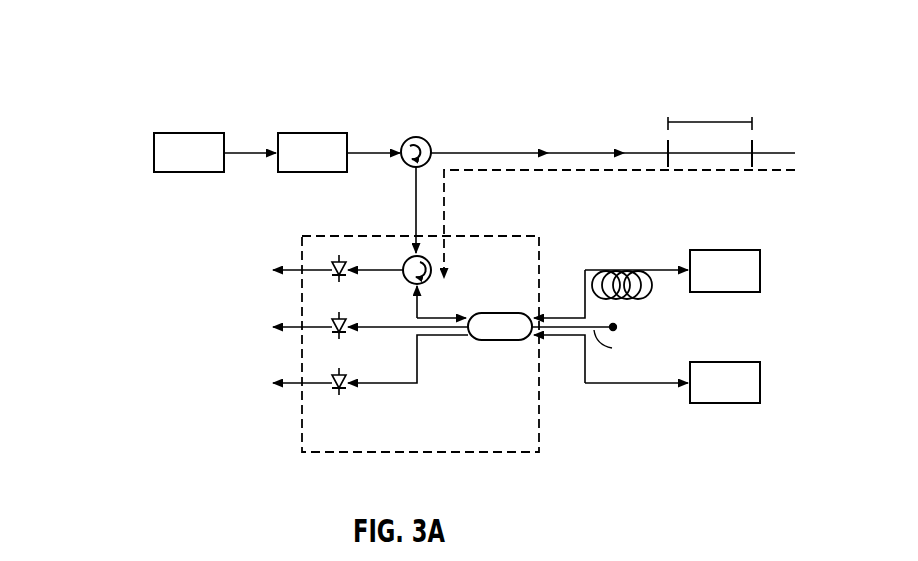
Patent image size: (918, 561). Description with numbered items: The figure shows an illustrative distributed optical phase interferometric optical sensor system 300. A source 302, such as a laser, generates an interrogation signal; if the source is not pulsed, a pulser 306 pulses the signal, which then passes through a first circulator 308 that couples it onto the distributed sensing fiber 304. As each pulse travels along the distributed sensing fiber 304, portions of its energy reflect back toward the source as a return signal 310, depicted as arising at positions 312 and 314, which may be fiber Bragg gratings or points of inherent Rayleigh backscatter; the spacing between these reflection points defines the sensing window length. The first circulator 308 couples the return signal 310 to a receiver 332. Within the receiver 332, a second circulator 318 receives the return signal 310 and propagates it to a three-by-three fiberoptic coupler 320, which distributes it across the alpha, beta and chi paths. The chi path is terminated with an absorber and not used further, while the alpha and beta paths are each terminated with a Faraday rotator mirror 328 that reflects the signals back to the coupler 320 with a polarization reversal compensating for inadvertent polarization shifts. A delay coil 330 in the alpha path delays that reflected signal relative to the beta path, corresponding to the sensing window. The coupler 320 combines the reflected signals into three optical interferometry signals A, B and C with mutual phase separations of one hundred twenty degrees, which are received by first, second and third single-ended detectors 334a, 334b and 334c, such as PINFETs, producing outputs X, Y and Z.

The optical sensor system 300 is at (110, 49).
The source 302 is at (189, 133).
The distributed sensing fiber 304 is at (502, 150).
The pulser 306 is at (313, 133).
The first circulator 308 is at (418, 137).
The return signal 310 is at (613, 171).
The position 312 is at (666, 143).
The position 314 is at (755, 143).
The second circulator 318 is at (431, 265).
The 3x3 fiberoptic coupler 320 is at (497, 343).
The Faraday rotator mirror 328 is at (727, 250).
The delay coil 330 is at (648, 295).
The receiver 332 is at (359, 235).
The first single-ended detector 334a is at (332, 267).
The second single-ended detector 334b is at (332, 323).
The third single-ended detector 334c is at (332, 379).